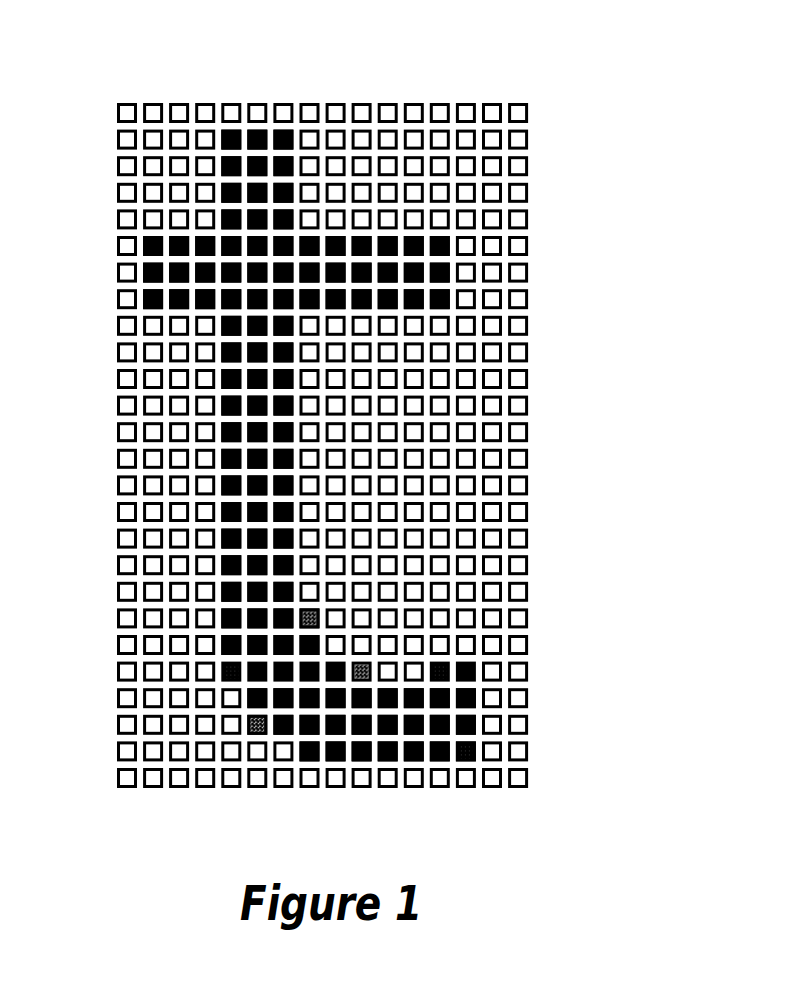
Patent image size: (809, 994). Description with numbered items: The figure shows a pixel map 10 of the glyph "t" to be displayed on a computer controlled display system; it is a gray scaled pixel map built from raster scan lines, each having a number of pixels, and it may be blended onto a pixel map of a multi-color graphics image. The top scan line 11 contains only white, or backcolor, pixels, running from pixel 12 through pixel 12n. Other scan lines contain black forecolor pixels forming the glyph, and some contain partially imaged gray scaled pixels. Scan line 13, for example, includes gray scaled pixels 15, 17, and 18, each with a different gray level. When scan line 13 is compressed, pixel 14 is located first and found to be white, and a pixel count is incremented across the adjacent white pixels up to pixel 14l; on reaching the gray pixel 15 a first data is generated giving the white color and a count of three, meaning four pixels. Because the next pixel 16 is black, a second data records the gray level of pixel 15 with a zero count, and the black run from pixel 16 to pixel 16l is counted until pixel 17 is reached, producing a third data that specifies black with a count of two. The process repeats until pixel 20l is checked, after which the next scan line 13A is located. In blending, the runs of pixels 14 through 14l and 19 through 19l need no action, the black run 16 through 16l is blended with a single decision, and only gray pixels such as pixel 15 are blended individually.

The pixel map 10 is at (687, 66).
The scan line 11 is at (80, 113).
The pixel 12 is at (125, 103).
The pixel 12n is at (514, 103).
The scan line 13 is at (571, 672).
The next scan line 13A is at (571, 697).
The pixel 14 is at (117, 670).
The pixel 14l is at (201, 663).
The gray scaled pixel 15 is at (228, 663).
The pixel 16 is at (254, 663).
The pixel 16l is at (332, 663).
The gray scaled pixel 17 is at (359, 663).
The gray scaled pixel 18 is at (385, 663).
The pixel 19 is at (411, 663).
The pixel 19l is at (438, 663).
The pixel 20l is at (528, 670).